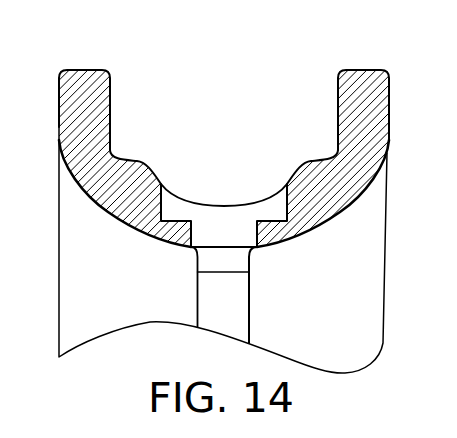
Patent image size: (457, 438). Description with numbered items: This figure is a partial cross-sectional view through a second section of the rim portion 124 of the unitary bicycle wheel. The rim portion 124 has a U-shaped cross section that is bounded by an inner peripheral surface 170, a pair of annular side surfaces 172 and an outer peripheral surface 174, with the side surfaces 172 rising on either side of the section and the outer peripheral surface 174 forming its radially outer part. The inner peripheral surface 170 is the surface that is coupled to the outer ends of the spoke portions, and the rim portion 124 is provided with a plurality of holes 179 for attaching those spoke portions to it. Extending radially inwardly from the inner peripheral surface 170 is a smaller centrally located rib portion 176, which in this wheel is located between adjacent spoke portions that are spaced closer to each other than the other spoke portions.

The rim portion 124 is at (225, 110).
The inner peripheral surface 170 is at (275, 247).
The annular side surfaces 172 is at (56, 107).
The outer peripheral surface 174 is at (83, 69).
The centrally located rib portion 176 is at (251, 297).
The holes 179 is at (178, 220).